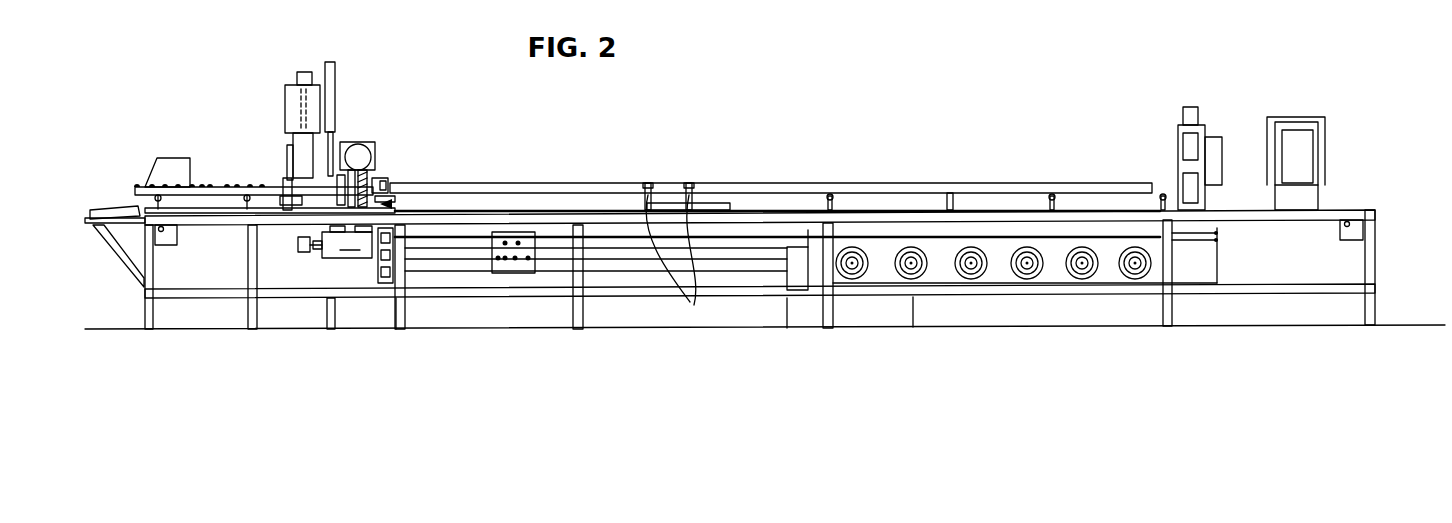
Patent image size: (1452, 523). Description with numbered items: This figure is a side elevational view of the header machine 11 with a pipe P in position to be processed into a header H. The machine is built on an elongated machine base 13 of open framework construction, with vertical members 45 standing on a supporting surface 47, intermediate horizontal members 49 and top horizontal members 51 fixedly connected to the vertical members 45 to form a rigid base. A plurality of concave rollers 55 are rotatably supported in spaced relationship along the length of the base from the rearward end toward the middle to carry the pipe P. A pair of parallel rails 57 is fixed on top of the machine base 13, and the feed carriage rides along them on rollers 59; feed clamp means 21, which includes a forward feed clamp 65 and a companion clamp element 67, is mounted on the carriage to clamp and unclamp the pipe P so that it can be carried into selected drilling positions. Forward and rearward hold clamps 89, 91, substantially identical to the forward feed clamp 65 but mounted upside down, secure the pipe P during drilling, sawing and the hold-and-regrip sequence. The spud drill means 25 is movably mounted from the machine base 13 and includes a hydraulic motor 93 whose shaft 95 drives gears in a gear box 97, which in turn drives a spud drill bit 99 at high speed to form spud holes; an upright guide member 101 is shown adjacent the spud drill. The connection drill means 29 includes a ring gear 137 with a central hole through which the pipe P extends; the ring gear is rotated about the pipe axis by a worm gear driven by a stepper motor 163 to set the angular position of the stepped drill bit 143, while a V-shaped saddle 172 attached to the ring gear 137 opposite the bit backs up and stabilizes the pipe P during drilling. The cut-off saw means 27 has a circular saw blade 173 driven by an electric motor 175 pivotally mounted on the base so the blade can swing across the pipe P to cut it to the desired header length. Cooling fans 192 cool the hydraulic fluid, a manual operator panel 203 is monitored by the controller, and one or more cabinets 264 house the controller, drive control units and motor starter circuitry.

The header machine 11 is at (1326, 74).
The machine base 13 is at (1352, 212).
The feed clamp means 21 is at (704, 174).
The spud drill means 25 is at (254, 133).
The cut-off saw means 27 is at (302, 259).
The connection drill means 29 is at (390, 136).
The vertical members 45 is at (146, 314).
The supporting surface 47 is at (1392, 323).
The intermediate horizontal members 49 is at (1264, 291).
The top horizontal members 51 is at (885, 215).
The concave rollers 55 is at (1055, 200).
The parallel rails 57 is at (562, 209).
The rollers 59 is at (684, 259).
The forward feed clamp 65 is at (648, 182).
The sensor 67 is at (688, 182).
The forward hold clamp 89 is at (288, 200).
The rearward hold clamp 91 is at (341, 146).
The hydraulic motor 93 is at (303, 72).
The shaft 95 is at (292, 107).
The gear box 97 is at (294, 157).
The spud drill bit 99 is at (289, 177).
The guide column 101 is at (334, 78).
The ring gear 137 is at (387, 178).
The stepped drill bit 143 is at (402, 198).
The stepper motor 163 is at (378, 165).
The V-shaped saddle 172 is at (392, 203).
The circular saw blade 173 is at (316, 249).
The electric motor 175 is at (368, 260).
The cooling fans 192 is at (861, 277).
The manual operator panel 203 is at (520, 269).
The cabinets 264 is at (1178, 141).
The header H is at (216, 187).
The pipe P is at (990, 188).